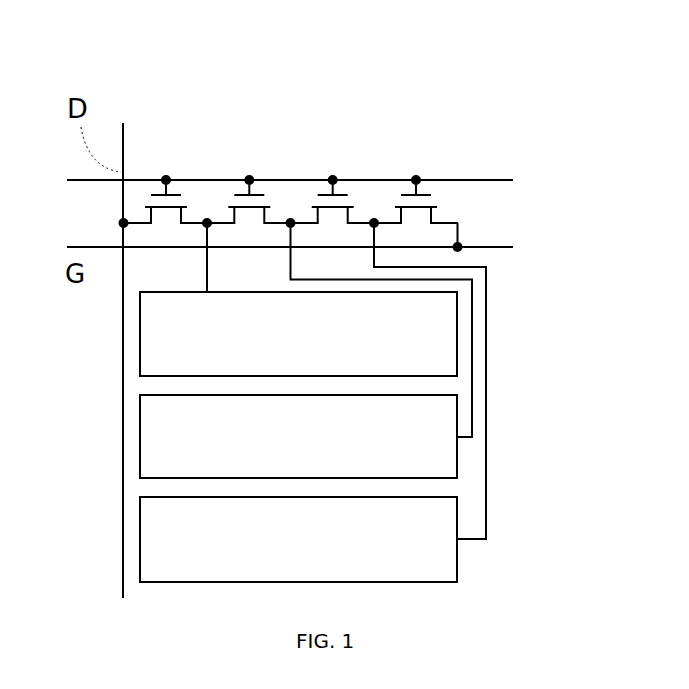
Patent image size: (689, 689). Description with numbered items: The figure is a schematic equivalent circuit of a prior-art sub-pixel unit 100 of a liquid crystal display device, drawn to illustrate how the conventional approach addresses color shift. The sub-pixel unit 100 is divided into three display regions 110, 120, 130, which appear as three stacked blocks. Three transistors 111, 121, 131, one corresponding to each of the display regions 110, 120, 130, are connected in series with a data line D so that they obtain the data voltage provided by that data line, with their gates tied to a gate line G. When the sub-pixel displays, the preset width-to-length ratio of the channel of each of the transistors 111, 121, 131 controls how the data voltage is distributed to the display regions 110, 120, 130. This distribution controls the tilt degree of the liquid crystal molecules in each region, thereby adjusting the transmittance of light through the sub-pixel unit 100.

The sub-pixel unit 100 is at (320, 42).
The transistor 111 is at (168, 152).
The transistor 121 is at (262, 152).
The transistor 131 is at (354, 152).
The display region 110 is at (298, 334).
The display region 120 is at (298, 436).
The display region 130 is at (298, 539).